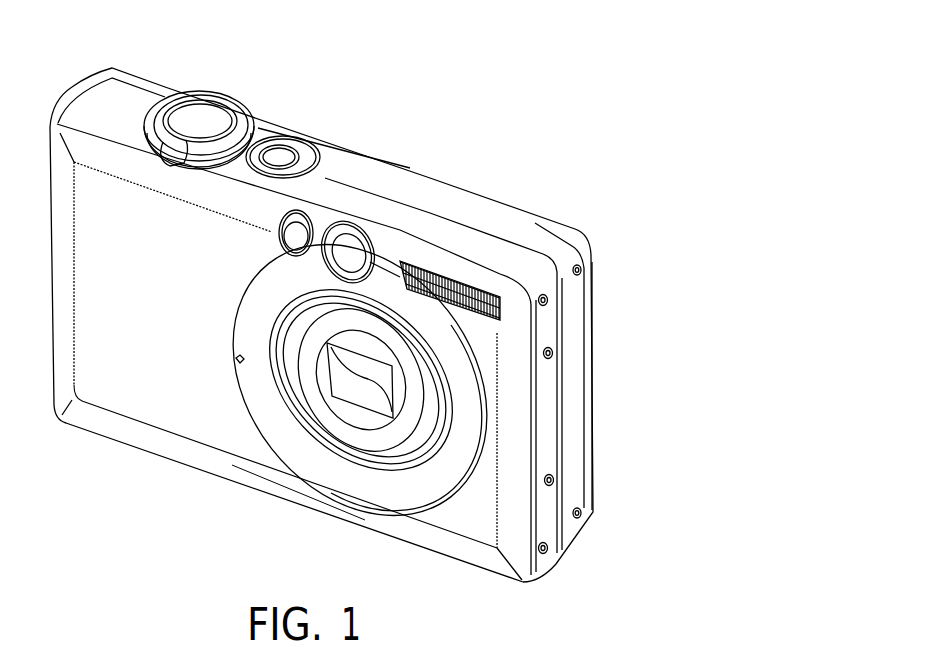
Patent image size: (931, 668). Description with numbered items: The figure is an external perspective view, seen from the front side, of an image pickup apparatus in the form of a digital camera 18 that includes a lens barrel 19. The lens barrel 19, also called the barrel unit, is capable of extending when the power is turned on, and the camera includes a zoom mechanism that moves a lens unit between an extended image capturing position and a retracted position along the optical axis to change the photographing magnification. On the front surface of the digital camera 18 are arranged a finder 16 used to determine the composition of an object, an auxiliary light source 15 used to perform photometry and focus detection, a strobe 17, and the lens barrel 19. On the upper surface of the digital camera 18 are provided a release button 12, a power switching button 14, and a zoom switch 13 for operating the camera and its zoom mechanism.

The release button 12 is at (206, 100).
The zoom switch 13 is at (248, 96).
The power switching button 14 is at (278, 150).
The auxiliary light source 15 is at (298, 235).
The finder 16 is at (352, 252).
The strobe 17 is at (448, 285).
The digital camera 18 is at (170, 427).
The lens barrel 19 is at (364, 440).